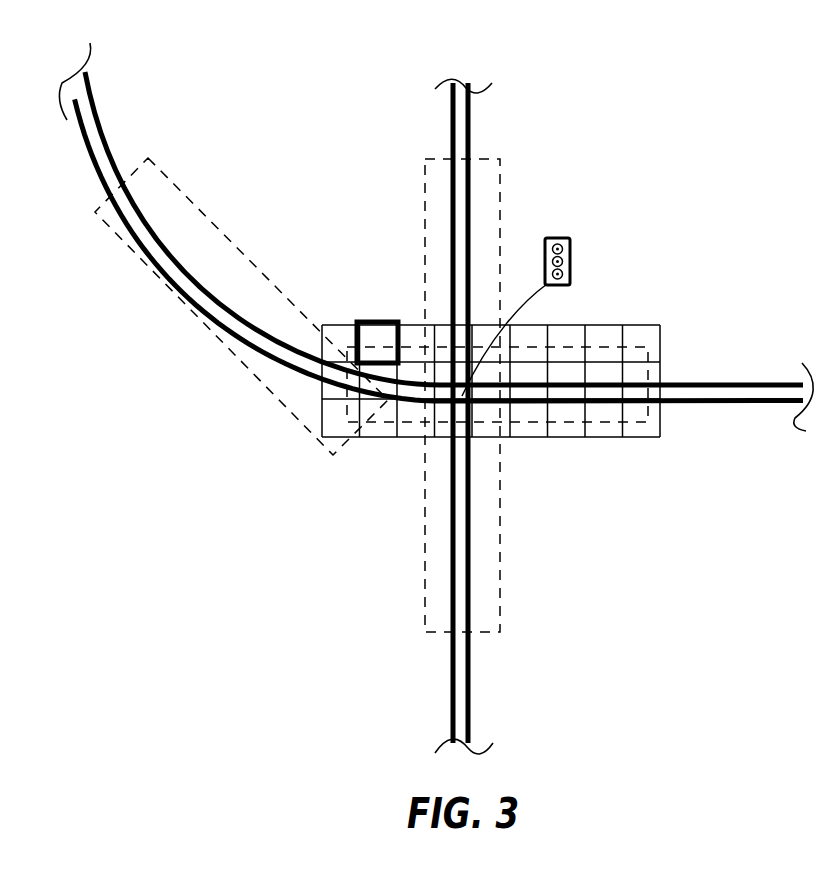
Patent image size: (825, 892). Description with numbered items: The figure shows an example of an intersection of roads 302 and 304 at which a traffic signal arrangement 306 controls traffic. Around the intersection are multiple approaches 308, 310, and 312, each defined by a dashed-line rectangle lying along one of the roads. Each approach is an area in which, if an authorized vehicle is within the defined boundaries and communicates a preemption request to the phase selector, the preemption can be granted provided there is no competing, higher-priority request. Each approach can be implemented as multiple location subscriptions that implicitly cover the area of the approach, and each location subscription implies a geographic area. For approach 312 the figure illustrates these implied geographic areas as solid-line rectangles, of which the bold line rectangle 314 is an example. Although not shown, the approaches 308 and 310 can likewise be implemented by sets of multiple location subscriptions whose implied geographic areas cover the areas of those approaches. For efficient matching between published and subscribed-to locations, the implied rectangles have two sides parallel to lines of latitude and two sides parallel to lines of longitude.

The road 302 is at (92, 101).
The road 304 is at (450, 99).
The traffic signal arrangement 306 is at (569, 238).
The approach 308 is at (203, 217).
The approach 310 is at (500, 167).
The approach 312 is at (640, 345).
The bold line rectangle 314 is at (378, 322).